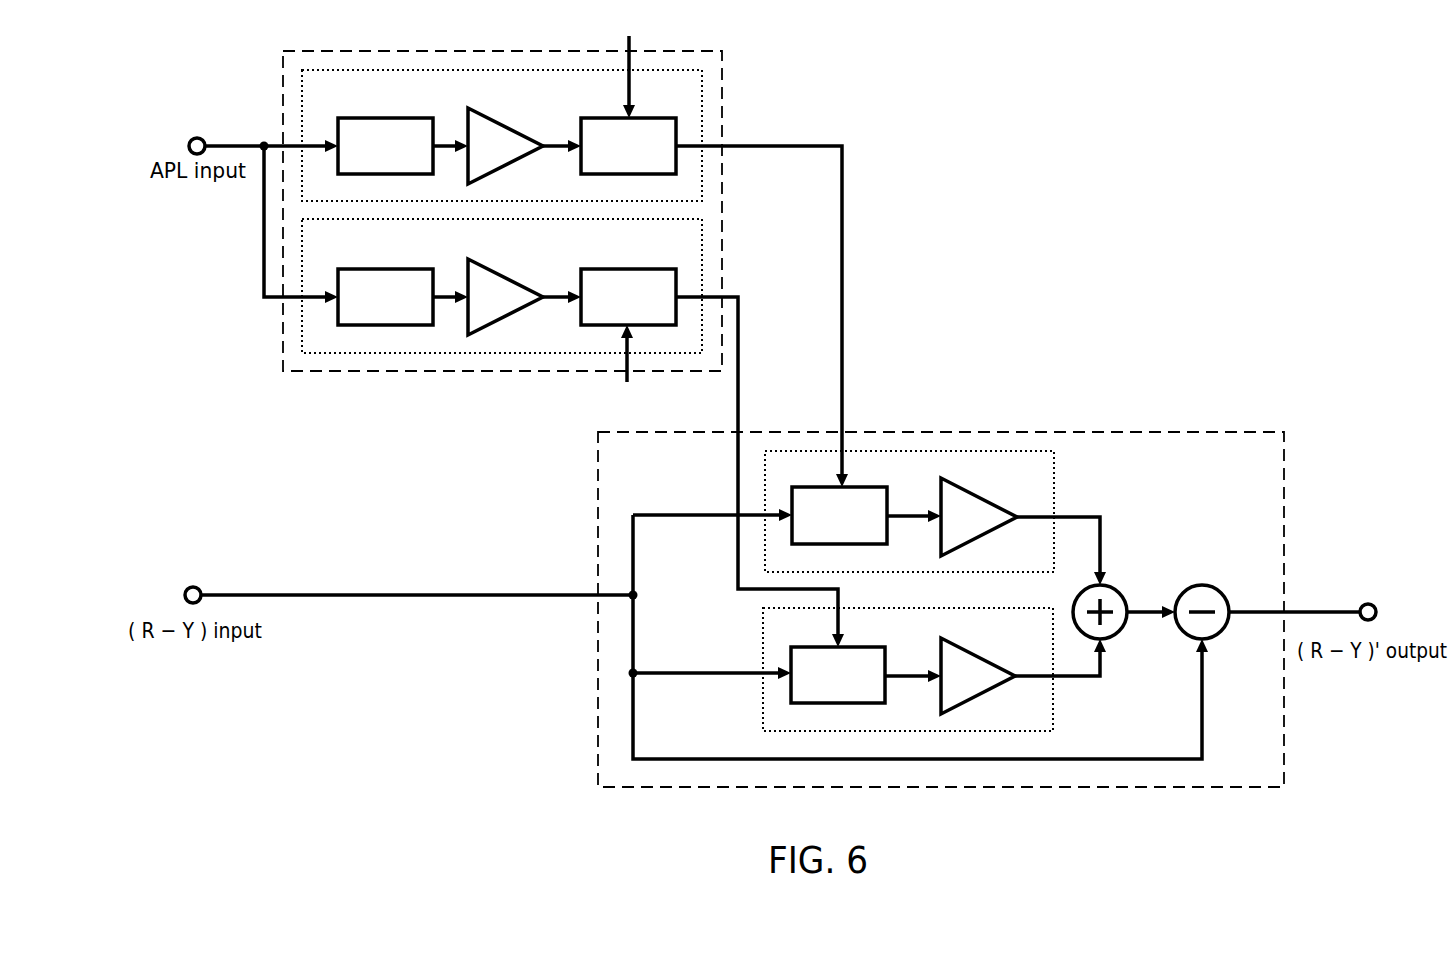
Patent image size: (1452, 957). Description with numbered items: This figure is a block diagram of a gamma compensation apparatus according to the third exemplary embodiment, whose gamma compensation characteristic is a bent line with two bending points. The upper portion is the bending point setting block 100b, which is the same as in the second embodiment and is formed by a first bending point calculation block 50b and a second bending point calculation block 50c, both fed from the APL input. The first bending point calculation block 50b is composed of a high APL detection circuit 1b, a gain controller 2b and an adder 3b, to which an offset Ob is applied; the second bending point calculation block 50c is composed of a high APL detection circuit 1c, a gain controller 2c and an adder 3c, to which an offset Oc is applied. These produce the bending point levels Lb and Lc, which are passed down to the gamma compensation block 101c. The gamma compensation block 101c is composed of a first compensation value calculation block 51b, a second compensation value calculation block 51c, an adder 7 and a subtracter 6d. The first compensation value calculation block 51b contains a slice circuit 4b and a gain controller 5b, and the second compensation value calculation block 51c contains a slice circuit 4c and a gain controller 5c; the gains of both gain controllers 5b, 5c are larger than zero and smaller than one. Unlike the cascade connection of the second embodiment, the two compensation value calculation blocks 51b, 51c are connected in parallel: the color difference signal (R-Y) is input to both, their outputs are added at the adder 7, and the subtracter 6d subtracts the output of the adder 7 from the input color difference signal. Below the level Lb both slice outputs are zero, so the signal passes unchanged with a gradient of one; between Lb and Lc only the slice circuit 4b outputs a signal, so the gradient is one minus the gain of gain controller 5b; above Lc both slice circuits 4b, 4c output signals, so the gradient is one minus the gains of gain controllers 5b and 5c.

The bending point setting block 100b is at (407, 51).
The second bending point calculation block 50c is at (535, 70).
The first bending point calculation block 50b is at (458, 353).
The high APL detection circuit 1c is at (365, 118).
The gain controller 2c is at (512, 123).
The adder 3c is at (640, 118).
The high APL detection circuit 1b is at (365, 269).
The gain controller 2b is at (512, 274).
The adder 3b is at (640, 269).
The offset signal Oc is at (630, 65).
The offset signal Ob is at (628, 367).
The second bending point level Lc is at (842, 345).
The first bending point level Lb is at (738, 363).
The gamma compensation block 101c is at (1072, 432).
The second compensation value calculation block 51c is at (933, 451).
The first compensation value calculation block 51b is at (1053, 705).
The slice circuit 4c is at (857, 487).
The gain controller 5c is at (985, 497).
The slice circuit 4b is at (855, 647).
The gain controller 5b is at (985, 656).
The adder 7 is at (1120, 592).
The subtracter 6d is at (1210, 586).